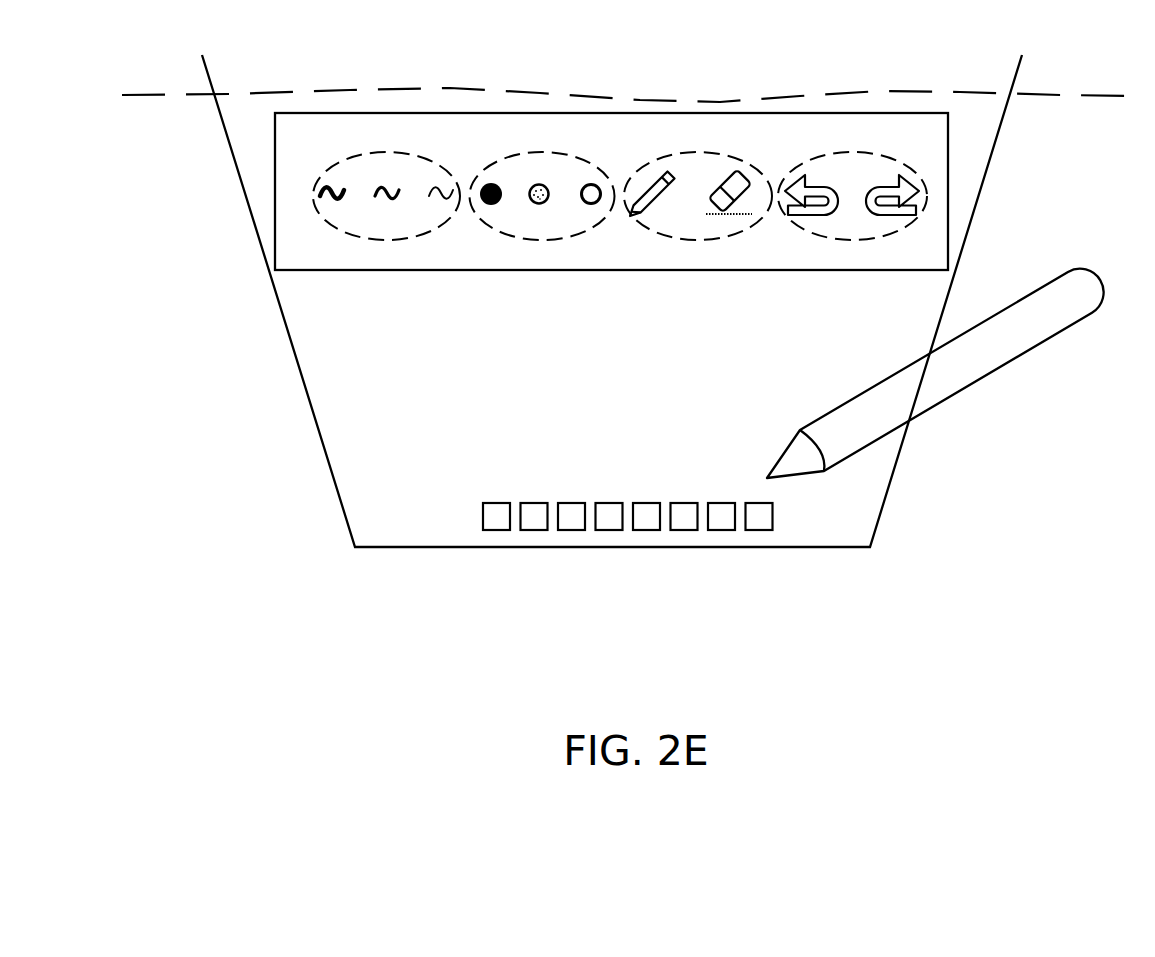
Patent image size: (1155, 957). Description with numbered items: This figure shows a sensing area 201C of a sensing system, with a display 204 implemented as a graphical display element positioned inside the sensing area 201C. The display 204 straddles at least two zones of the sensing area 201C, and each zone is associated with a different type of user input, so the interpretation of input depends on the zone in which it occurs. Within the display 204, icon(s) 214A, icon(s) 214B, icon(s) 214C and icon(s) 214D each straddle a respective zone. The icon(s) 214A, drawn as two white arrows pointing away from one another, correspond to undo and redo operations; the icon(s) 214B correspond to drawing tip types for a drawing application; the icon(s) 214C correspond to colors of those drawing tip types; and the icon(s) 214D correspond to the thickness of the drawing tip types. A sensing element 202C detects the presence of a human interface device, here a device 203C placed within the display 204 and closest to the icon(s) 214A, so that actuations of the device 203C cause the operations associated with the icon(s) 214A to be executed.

The display 204 is at (412, 144).
The icon(s) 214A is at (853, 241).
The icon(s) 214B is at (698, 241).
The icon(s) 214C is at (543, 241).
The icon(s) 214D is at (387, 241).
The sensing area 201C is at (402, 480).
The sensing element 202C is at (497, 520).
The device 203C is at (1007, 327).